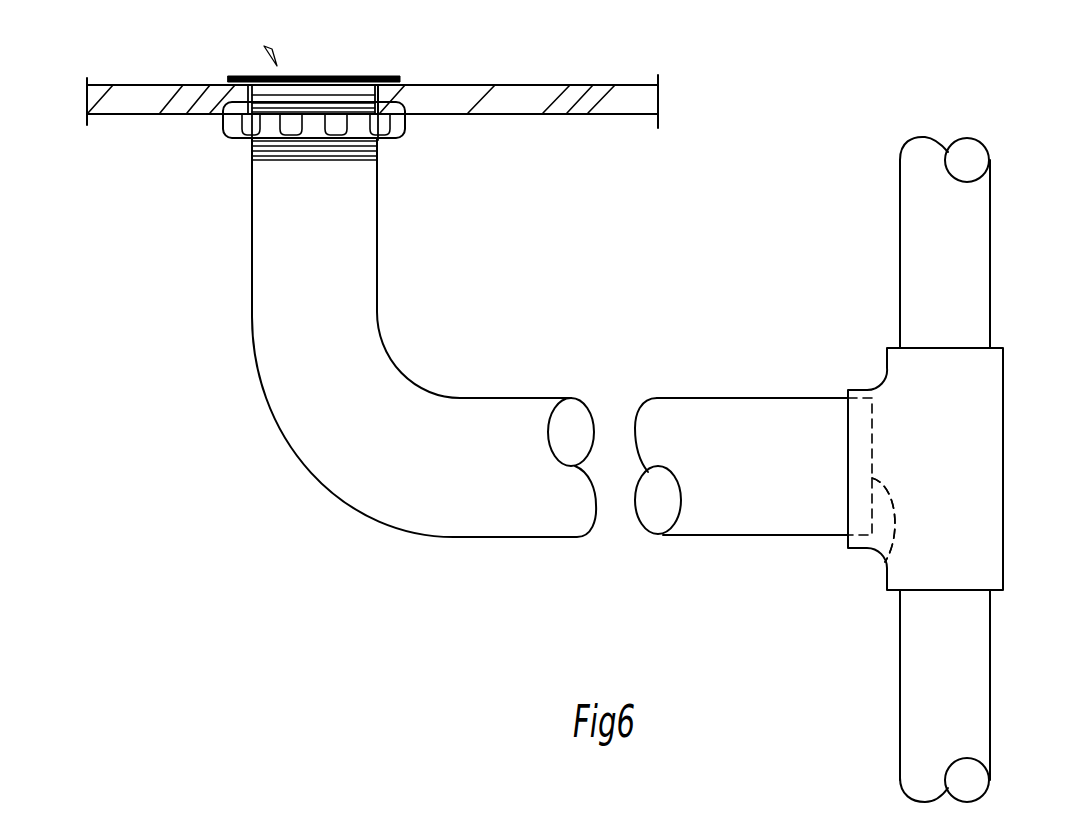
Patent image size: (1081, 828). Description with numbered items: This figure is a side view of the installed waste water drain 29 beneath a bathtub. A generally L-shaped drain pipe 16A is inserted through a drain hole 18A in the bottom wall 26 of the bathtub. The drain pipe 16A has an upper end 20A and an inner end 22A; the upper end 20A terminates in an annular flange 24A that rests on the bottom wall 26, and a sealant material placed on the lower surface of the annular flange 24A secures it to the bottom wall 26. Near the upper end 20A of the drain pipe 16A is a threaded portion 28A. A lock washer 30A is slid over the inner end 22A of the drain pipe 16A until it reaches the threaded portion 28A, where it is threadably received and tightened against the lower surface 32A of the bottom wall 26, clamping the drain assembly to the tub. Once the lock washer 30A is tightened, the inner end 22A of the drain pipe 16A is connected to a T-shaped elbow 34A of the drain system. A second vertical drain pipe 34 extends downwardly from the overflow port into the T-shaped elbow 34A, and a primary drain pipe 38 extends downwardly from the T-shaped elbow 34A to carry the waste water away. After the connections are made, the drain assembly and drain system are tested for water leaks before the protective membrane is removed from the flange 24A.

The drain pipe 16A is at (318, 474).
The drain hole 18A is at (405, 104).
The upper end 20A is at (402, 82).
The inner end 22A is at (884, 563).
The annular flange 24A is at (228, 80).
The bottom wall 26 is at (124, 85).
The threaded portion 28A is at (335, 78).
The waste water drain 29 is at (270, 50).
The lock washer 30A is at (245, 140).
The lower surface 32A is at (138, 115).
The second vertical drain pipe 34 is at (977, 270).
The T-shaped elbow 34A is at (984, 472).
The primary drain pipe 38 is at (977, 710).